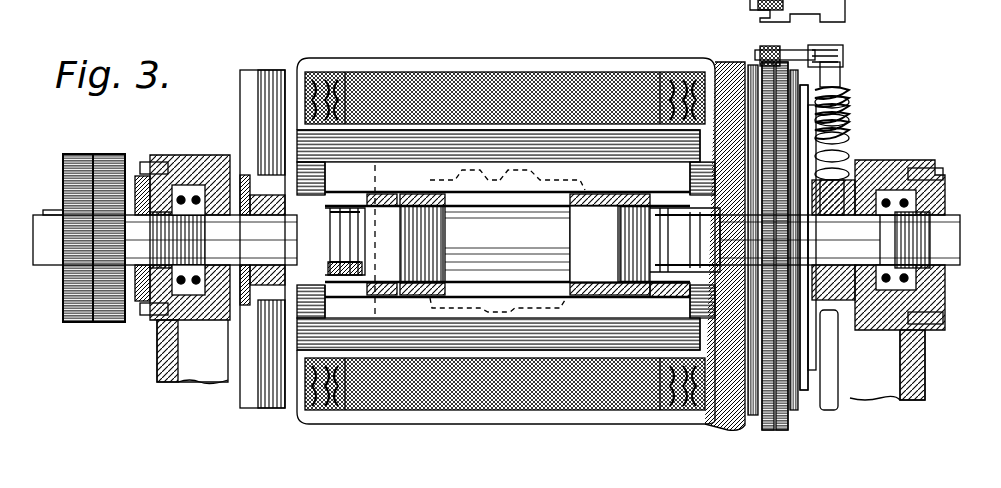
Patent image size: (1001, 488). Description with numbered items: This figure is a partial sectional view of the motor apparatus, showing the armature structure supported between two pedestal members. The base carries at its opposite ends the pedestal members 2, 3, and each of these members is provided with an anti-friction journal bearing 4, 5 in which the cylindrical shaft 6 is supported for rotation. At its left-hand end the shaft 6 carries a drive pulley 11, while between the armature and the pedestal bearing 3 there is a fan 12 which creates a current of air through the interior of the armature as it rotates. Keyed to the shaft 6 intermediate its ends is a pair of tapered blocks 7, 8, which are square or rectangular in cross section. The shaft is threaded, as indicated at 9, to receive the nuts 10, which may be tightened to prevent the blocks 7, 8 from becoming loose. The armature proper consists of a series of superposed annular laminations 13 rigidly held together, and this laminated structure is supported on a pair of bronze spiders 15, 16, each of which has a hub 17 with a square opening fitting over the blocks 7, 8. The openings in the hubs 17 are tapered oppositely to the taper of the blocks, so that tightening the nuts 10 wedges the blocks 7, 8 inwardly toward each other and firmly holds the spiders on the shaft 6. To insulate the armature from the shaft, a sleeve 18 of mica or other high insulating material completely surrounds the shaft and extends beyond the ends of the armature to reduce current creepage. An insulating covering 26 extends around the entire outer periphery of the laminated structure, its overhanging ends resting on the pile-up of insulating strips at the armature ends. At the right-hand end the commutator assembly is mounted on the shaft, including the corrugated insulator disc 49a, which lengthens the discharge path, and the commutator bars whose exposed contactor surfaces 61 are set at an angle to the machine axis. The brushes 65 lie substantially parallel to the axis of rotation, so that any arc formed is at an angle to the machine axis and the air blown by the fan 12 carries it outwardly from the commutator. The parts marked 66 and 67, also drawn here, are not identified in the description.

The pedestal member 2 is at (920, 372).
The pedestal member 3 is at (157, 355).
The journal bearing 4 is at (892, 200).
The journal bearing 5 is at (180, 196).
The cylindrical shaft 6 is at (955, 226).
The tapered block 7 is at (410, 222).
The tapered block 8 is at (628, 226).
The threaded portion of shaft 9 is at (330, 275).
The nut 10 is at (332, 212).
The drive pulley 11 is at (78, 180).
The fan 12 is at (248, 97).
The annular laminations 13 is at (535, 84).
The spider 15 is at (500, 225).
The spider 16 is at (542, 179).
The hub 17 is at (602, 290).
The insulating sleeve 18 is at (497, 306).
The insulating covering 26 is at (628, 74).
The insulator disc 49a is at (802, 98).
The contactor surface 61 is at (770, 400).
The brush 65 is at (760, 62).
The terminal 66 is at (782, 11).
The insulator 67 is at (850, 110).